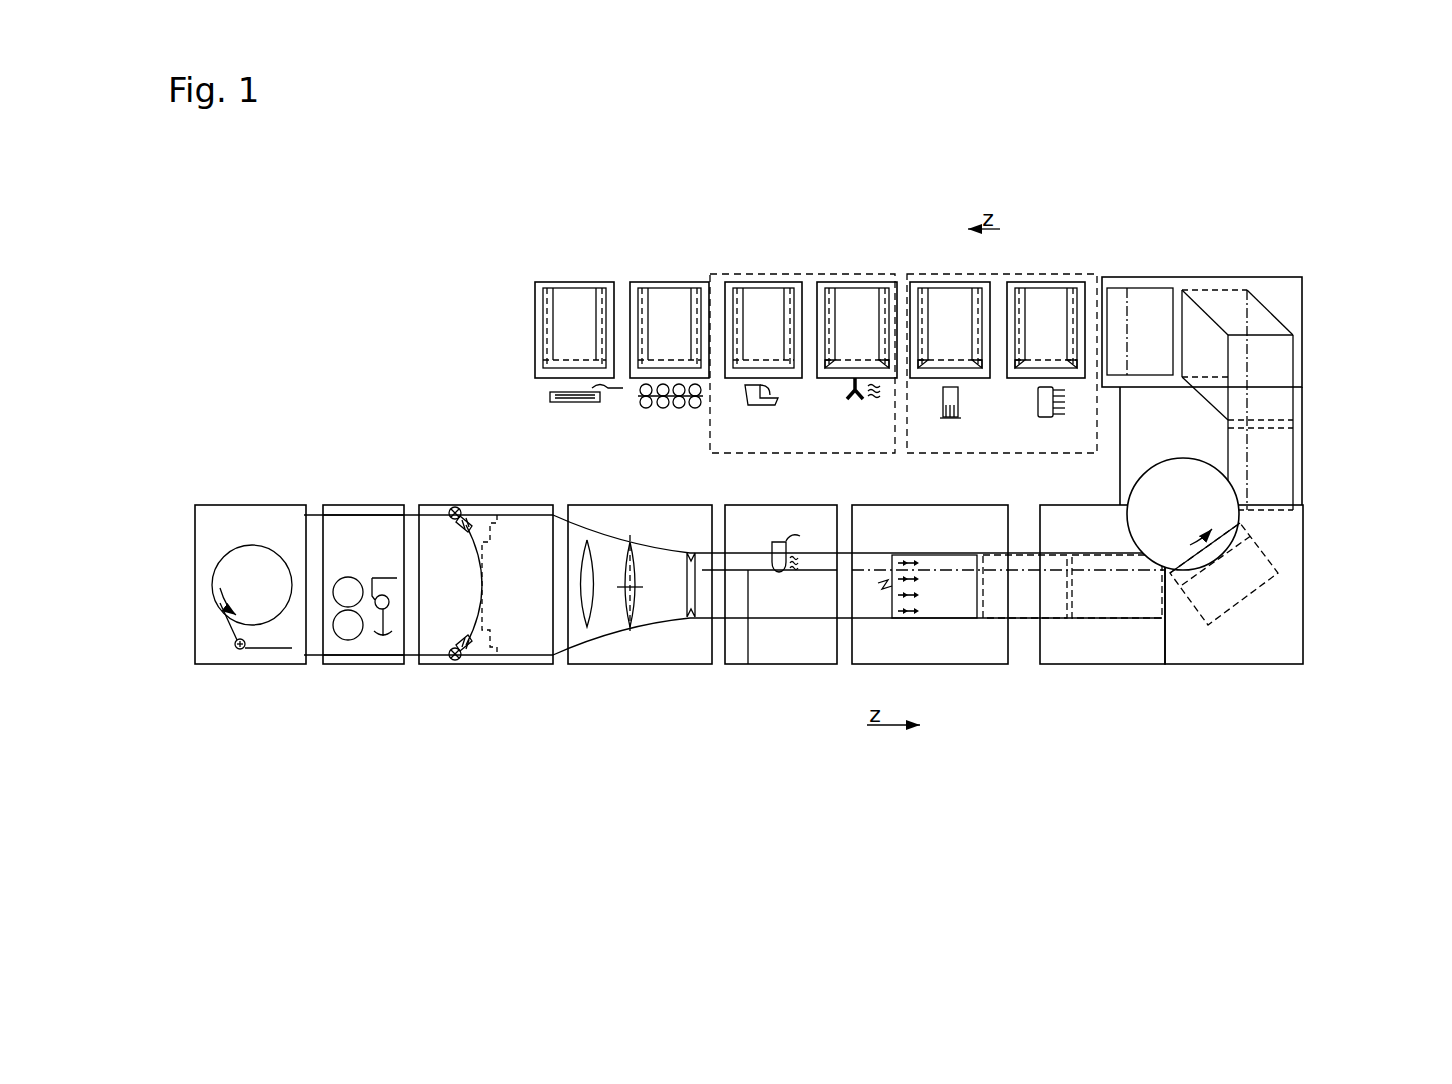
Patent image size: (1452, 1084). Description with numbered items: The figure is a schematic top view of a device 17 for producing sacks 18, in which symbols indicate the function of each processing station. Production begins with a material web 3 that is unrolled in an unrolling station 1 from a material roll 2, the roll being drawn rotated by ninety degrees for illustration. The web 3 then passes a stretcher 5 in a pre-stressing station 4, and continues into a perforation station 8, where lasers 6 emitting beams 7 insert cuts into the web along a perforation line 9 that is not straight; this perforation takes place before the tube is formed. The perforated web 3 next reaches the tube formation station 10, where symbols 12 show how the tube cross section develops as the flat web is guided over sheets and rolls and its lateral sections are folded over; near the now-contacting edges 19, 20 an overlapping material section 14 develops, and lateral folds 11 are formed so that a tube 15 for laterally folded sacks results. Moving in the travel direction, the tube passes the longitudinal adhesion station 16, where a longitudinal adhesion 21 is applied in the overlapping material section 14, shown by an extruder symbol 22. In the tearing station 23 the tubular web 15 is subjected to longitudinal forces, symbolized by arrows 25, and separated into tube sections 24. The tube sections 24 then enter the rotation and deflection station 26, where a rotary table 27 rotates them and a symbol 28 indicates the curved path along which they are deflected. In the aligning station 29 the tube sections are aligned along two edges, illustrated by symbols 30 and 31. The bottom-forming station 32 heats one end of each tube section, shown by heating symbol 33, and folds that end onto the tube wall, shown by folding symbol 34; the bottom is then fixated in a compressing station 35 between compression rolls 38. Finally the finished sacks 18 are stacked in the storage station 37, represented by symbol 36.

The unrolling station 1 is at (228, 690).
The material roll 2 is at (252, 572).
The material web 3 is at (358, 533).
The pre-stressing station 4 is at (373, 680).
The stretcher 5 is at (345, 573).
The lasers 6 is at (458, 665).
The beams 7 is at (493, 647).
The perforation station 8 is at (503, 485).
The perforation line 9 is at (482, 587).
The tube formation station 10 is at (692, 693).
The lateral folds 11 is at (685, 627).
The symbols 12 is at (598, 582).
The overlapping material section 14 is at (593, 552).
The tube 15 is at (770, 607).
The longitudinal adhesion station 16 is at (771, 497).
The device 17 is at (487, 202).
The sacks 18 is at (583, 310).
The edge 19 is at (347, 510).
The edge 20 is at (360, 653).
The longitudinal adhesion 21 is at (862, 572).
The extruder symbol 22 is at (786, 540).
The tearing station 23 is at (995, 647).
The tube sections 24 is at (945, 592).
The arrows 25 is at (915, 598).
The rotation and deflection station 26 is at (1325, 517).
The rotary table 27 is at (1205, 500).
The symbol 28 is at (1252, 335).
The aligning station 29 is at (1035, 260).
The symbol 30 is at (1047, 418).
The symbol 31 is at (955, 407).
The bottom-forming station 32 is at (803, 260).
The heating symbol 33 is at (853, 388).
The folding symbol 34 is at (768, 383).
The compressing station 35 is at (687, 260).
The symbol 36 is at (560, 393).
The storage station 37 is at (527, 278).
The compression rolls 38 is at (665, 392).